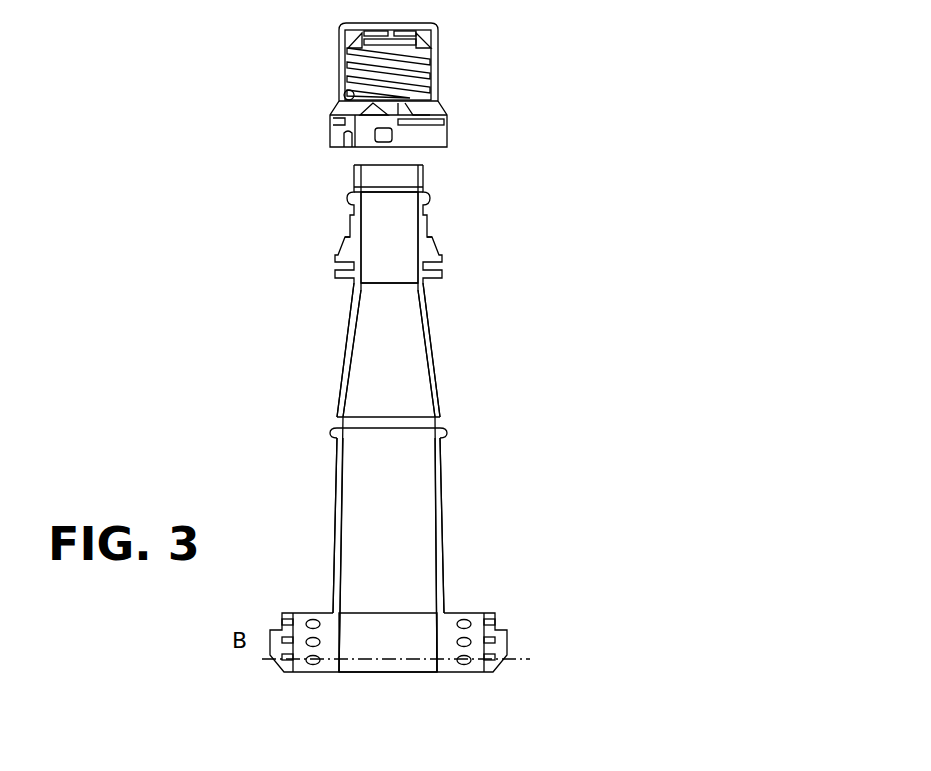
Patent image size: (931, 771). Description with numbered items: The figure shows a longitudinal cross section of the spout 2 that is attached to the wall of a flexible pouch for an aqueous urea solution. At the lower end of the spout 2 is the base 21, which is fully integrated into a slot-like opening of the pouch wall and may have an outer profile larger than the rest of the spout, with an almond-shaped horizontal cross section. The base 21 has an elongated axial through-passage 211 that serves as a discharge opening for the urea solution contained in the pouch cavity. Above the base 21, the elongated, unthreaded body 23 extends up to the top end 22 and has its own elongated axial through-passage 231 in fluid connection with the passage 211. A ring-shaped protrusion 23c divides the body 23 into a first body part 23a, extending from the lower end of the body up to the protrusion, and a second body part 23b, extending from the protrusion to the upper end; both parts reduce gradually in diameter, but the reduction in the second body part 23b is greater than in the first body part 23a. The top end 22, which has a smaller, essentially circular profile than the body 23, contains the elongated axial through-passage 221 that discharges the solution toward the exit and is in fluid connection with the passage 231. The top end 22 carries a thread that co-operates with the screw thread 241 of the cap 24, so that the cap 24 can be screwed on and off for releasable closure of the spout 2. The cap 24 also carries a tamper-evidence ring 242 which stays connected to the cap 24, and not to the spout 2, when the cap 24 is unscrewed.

The spout 2 is at (252, 122).
The cap 24 is at (433, 85).
The screw thread 241 is at (425, 71).
The tamper-evidence ring 242 is at (427, 135).
The top end 22 is at (410, 209).
The elongated axial through-passage of the top end 221 is at (389, 237).
The body 23 is at (425, 503).
The first body part 23a is at (399, 346).
The second body part 23b is at (417, 571).
The ring-shaped protrusion 23c is at (440, 432).
The elongated axial through-passage of the body 231 is at (388, 481).
The base 21 is at (498, 640).
The elongated axial through-passage of the base 211 is at (388, 642).